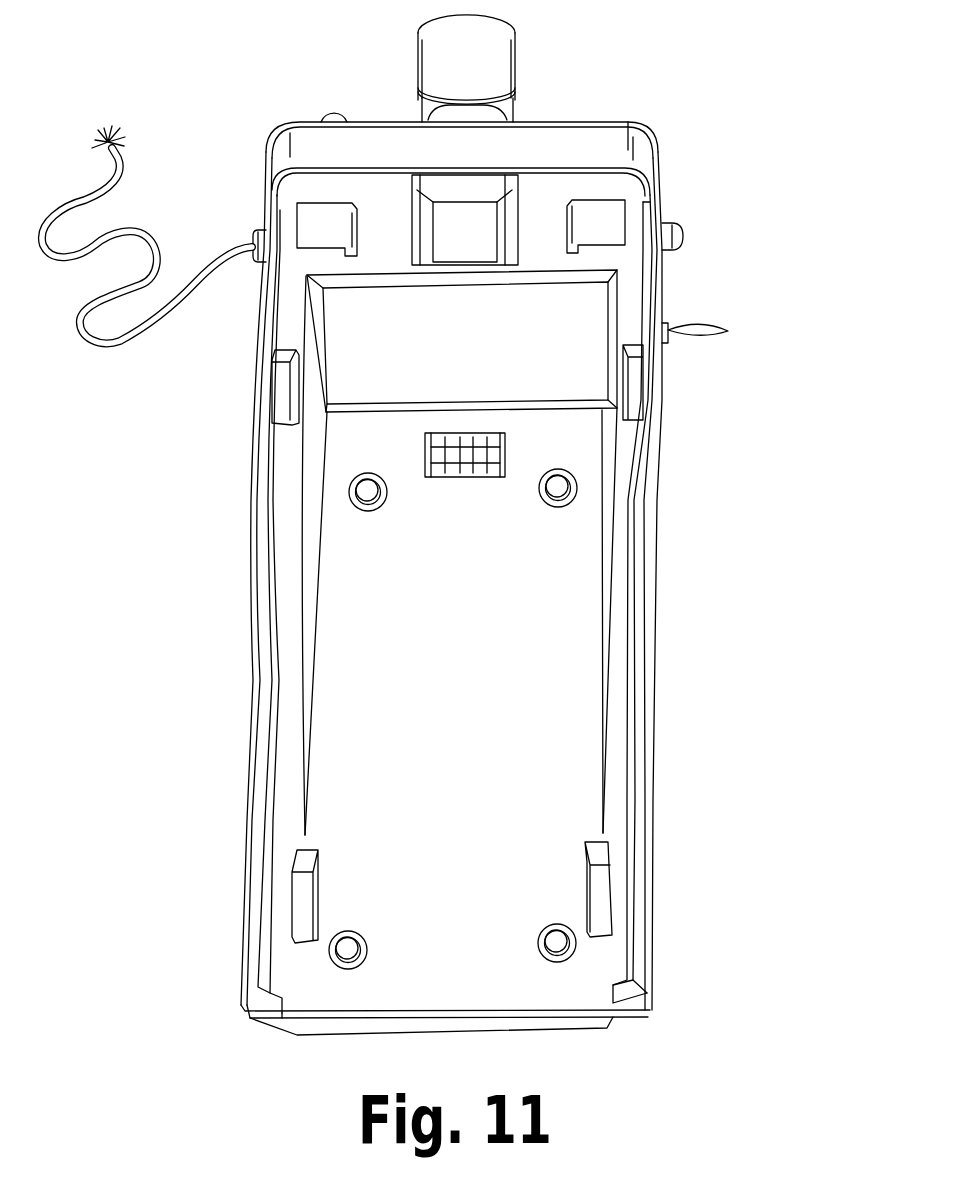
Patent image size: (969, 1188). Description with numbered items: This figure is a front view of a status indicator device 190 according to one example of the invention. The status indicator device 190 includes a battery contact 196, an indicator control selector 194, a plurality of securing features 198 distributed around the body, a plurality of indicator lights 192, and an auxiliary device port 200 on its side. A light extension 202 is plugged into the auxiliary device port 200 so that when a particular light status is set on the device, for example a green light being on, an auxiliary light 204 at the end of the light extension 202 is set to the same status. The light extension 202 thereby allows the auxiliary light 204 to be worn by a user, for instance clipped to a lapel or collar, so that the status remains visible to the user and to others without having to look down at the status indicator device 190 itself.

The status indicator device 190 is at (580, 133).
The indicator lights 192 is at (333, 117).
The indicator control selector 194 is at (706, 334).
The battery contact 196 is at (470, 463).
The securing features 198 is at (315, 217).
The auxiliary device port 200 is at (257, 237).
The light extension 202 is at (133, 342).
The auxiliary light 204 is at (93, 128).